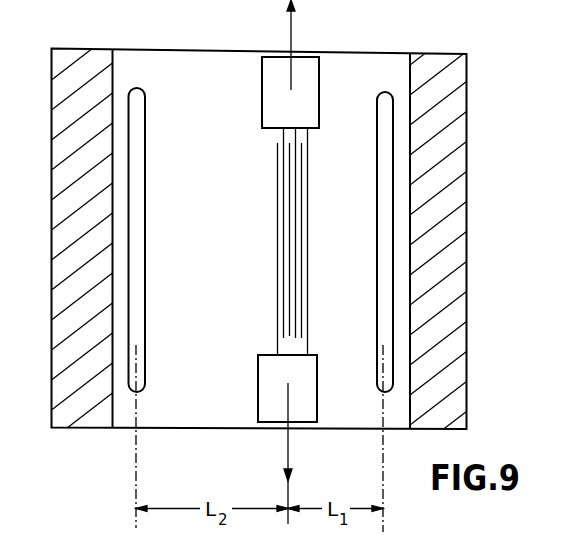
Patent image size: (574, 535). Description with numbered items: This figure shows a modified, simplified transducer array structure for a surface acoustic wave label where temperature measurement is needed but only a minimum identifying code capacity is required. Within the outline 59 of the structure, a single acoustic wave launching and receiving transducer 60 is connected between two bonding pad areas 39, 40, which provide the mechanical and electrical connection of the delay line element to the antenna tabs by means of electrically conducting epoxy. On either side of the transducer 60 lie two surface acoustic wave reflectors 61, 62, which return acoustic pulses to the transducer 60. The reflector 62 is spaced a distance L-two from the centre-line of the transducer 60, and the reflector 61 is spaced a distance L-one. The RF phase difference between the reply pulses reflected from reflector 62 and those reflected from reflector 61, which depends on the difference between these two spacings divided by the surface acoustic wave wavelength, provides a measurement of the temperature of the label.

The housing 59 is at (132, 49).
The surface acoustic wave reflector 62 is at (147, 136).
The surface acoustic wave reflector 61 is at (382, 113).
The bonding pad area 40 is at (308, 69).
The single acoustic wave launching and receiving transducer 60 is at (278, 288).
The bonding pad area 39 is at (273, 413).